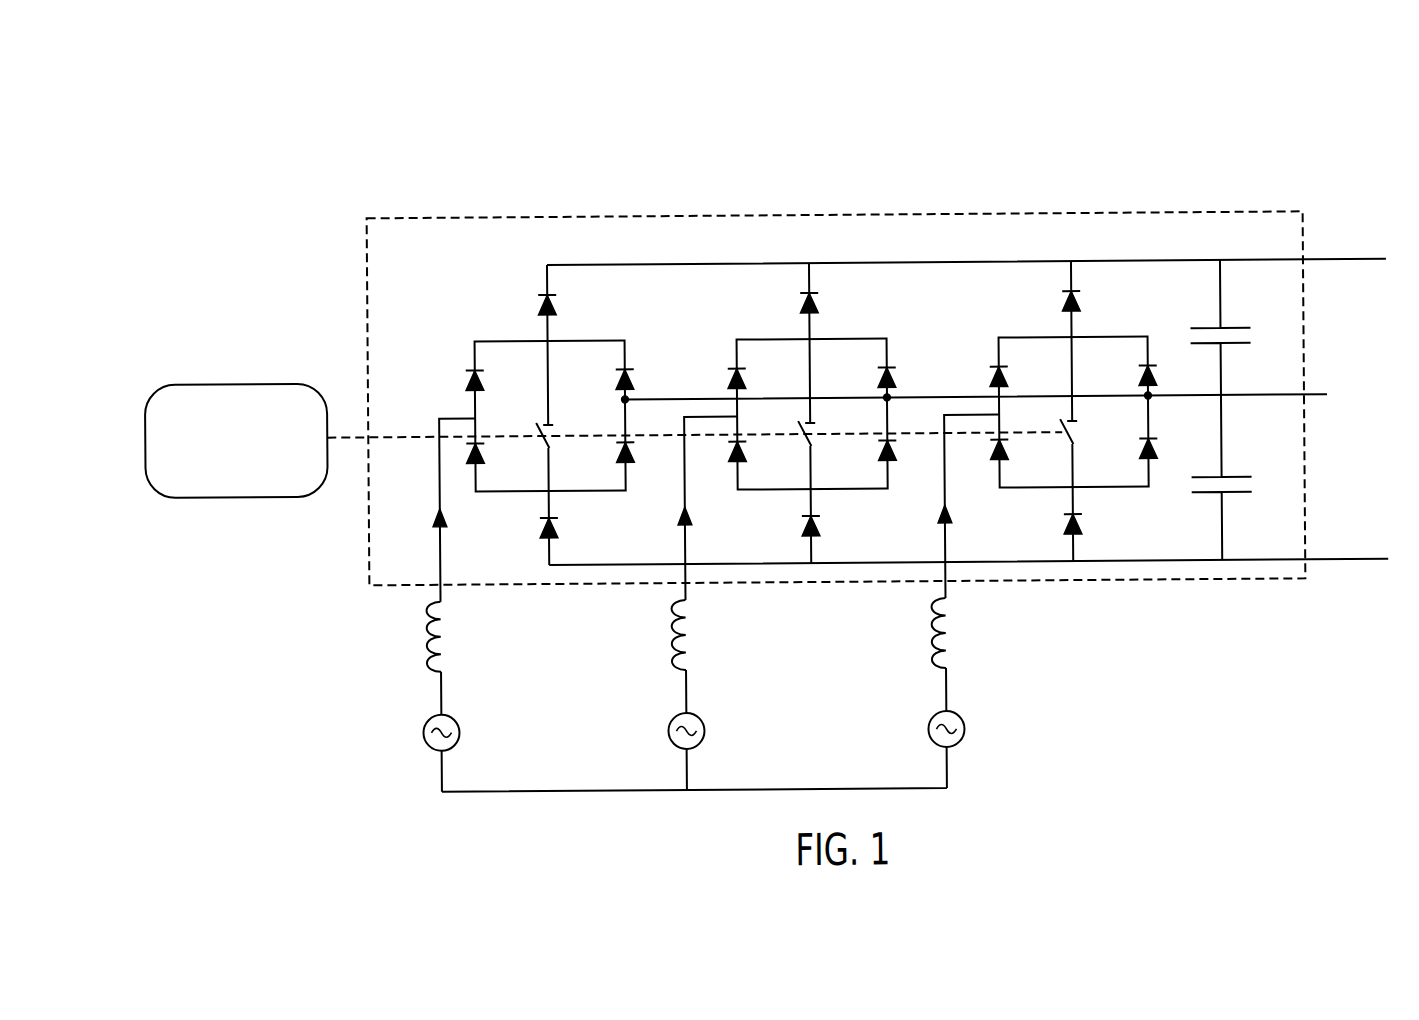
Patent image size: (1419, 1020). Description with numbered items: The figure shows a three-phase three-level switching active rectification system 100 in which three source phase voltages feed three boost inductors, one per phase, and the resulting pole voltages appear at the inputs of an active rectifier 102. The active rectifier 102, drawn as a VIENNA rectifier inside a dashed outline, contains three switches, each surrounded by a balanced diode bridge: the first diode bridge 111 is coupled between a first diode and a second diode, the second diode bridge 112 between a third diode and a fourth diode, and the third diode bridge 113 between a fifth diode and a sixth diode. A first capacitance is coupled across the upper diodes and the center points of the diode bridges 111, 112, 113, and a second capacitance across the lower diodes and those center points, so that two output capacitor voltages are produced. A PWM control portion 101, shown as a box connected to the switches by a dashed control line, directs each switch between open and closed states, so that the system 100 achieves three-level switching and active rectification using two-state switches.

The active rectification system 100 is at (1224, 126).
The PWM control portion 101 is at (236, 382).
The active rectifier 102 is at (1138, 212).
The first diode bridge 111 is at (596, 329).
The second diode bridge 112 is at (861, 328).
The third diode bridge 113 is at (1106, 492).